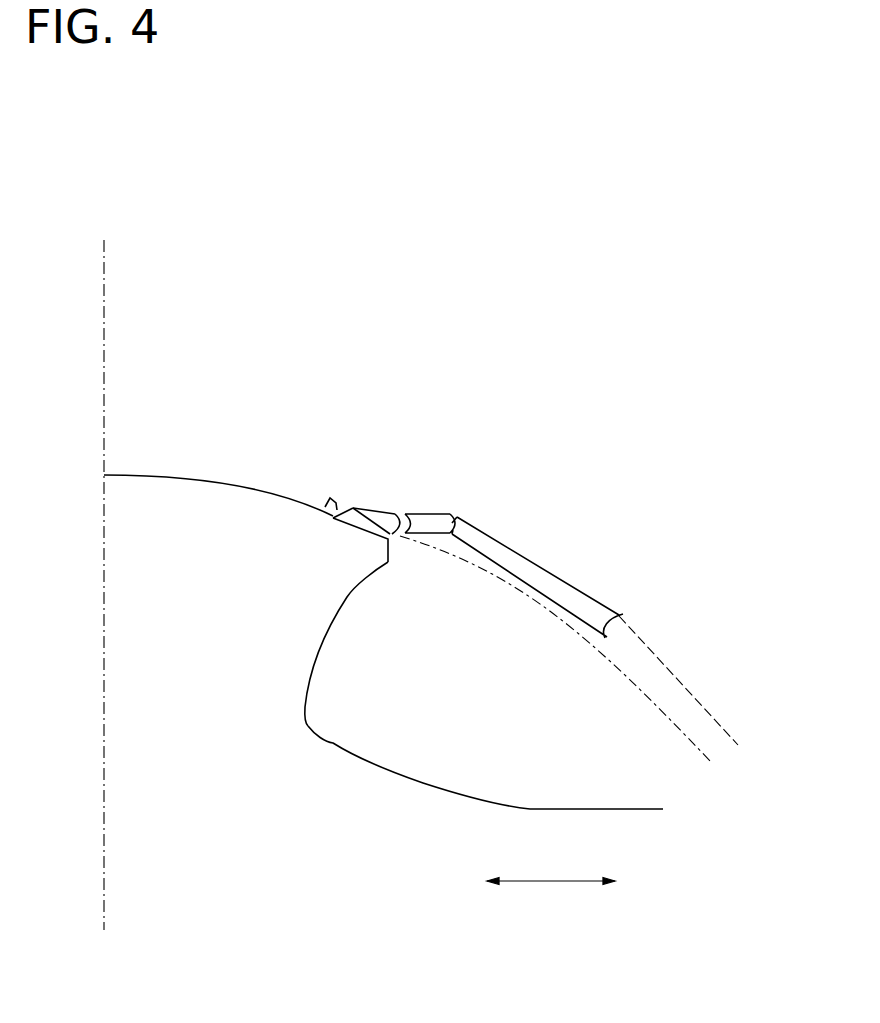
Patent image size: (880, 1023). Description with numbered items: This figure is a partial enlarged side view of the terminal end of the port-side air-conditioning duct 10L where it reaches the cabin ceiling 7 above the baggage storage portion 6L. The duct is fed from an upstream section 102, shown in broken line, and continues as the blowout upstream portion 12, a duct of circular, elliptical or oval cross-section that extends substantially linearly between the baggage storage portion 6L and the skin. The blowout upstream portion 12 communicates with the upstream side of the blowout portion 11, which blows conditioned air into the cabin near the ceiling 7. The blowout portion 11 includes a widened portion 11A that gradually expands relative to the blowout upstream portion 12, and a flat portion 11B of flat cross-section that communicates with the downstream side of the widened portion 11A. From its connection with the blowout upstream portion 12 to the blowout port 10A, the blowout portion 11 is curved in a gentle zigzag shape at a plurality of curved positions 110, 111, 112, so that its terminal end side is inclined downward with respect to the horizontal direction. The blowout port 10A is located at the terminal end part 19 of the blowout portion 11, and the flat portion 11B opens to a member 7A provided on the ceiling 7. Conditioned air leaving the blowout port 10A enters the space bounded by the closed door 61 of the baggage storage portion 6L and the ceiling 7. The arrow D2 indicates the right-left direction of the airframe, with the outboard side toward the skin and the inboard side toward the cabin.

The ceiling 7 is at (224, 485).
The member provided on the ceiling 7A is at (343, 524).
The terminal end part 19 is at (325, 503).
The blowout port 10A is at (333, 515).
The air-conditioning duct 10L is at (633, 585).
The upstream section 102 is at (680, 683).
The blowout portion 11 is at (419, 459).
The widened portion 11A is at (430, 513).
The flat portion 11B is at (360, 468).
The curved position 110 is at (352, 502).
The curved position 111 is at (385, 543).
The curved position 112 is at (458, 513).
The blowout upstream portion 12 is at (547, 571).
The baggage storage portion 6L is at (484, 691).
The closed door 61 is at (328, 743).
The right-left direction D2 is at (551, 868).